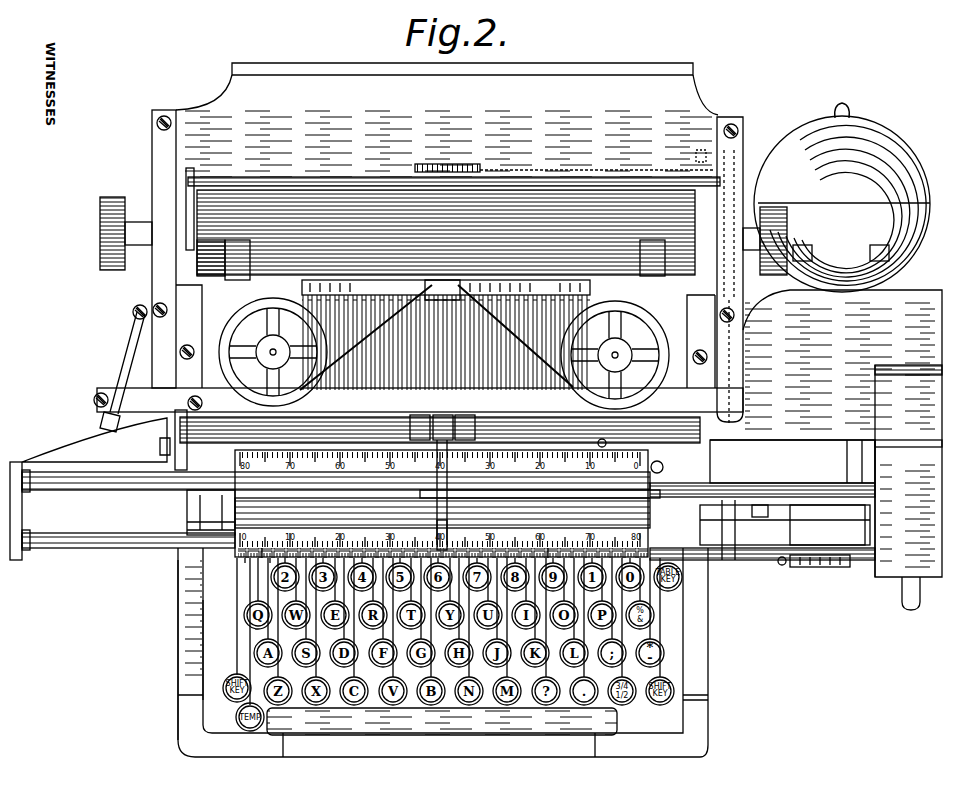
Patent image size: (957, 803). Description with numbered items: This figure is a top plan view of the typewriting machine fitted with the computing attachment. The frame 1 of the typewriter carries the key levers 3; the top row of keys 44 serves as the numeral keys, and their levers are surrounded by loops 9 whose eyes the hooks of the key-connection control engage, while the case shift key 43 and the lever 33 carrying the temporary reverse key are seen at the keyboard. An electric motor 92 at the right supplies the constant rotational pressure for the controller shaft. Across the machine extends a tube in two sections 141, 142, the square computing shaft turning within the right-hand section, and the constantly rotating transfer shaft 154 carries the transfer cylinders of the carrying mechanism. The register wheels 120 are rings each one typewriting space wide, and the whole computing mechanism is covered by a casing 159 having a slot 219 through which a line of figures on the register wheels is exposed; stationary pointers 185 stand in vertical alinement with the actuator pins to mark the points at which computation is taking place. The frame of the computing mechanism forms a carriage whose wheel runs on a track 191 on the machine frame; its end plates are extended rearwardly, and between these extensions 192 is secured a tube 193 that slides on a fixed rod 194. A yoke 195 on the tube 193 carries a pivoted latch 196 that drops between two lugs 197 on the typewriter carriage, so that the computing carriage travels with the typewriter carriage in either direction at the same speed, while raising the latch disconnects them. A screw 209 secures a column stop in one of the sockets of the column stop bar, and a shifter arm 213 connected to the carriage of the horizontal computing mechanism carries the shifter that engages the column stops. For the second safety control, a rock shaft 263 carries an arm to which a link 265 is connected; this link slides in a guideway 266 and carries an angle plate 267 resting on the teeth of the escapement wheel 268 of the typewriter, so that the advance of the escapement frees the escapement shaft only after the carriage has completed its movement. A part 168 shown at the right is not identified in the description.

The escapement wheel 268 is at (446, 155).
The angle plate 267 is at (452, 168).
The link 265 is at (560, 171).
The guideway 266 is at (701, 170).
The electric motor 92 is at (842, 197).
The rock shaft 263 is at (731, 302).
The lugs 197 is at (416, 421).
The latch 196 is at (445, 420).
The fixed rod 194 is at (144, 489).
The tube 193 is at (357, 491).
The tube section 141 is at (128, 551).
The loops 9 is at (14, 516).
The extensions 192 is at (211, 512).
The track 191 is at (186, 527).
The slot 219 is at (265, 548).
The yoke 195 is at (462, 505).
The stationary pointers 185 is at (447, 529).
The register wheels 120 is at (555, 550).
The transfer shaft 154 is at (758, 519).
The casing 159 is at (827, 525).
The tube section 142 is at (736, 561).
The shifter arm 213 is at (722, 562).
The handle 168 is at (906, 611).
The frame 1 is at (176, 581).
The screw 209 is at (245, 563).
The top row of keys 44 is at (270, 583).
The case shift key 43 is at (236, 645).
The lever 33 is at (238, 717).
The key levers 3 is at (372, 675).